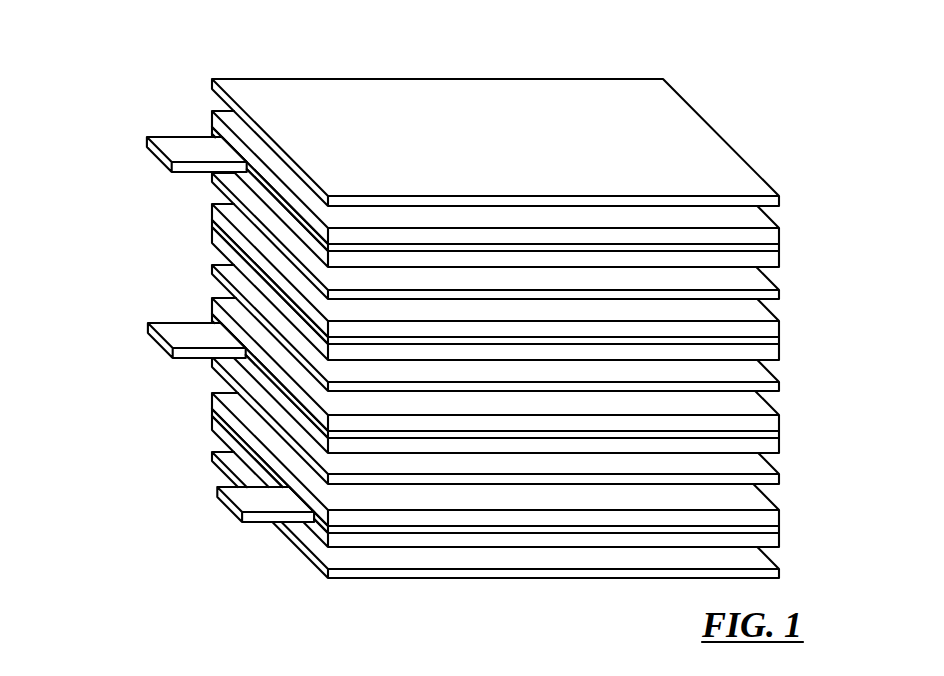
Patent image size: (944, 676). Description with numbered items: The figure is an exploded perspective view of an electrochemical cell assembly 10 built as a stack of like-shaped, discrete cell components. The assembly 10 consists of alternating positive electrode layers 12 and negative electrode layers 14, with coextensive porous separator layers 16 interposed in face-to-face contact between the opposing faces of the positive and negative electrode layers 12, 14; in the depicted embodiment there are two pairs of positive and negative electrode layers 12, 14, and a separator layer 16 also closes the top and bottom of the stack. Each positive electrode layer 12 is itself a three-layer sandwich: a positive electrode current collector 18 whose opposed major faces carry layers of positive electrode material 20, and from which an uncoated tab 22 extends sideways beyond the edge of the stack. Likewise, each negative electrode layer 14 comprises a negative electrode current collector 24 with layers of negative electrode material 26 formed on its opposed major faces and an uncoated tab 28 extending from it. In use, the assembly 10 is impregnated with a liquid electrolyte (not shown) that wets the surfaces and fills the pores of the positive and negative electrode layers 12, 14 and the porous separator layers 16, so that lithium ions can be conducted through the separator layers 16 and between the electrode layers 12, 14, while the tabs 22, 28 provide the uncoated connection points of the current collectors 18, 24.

The electrochemical cell assembly 10 is at (141, 46).
The positive electrode layer 12 is at (492, 273).
The negative electrode layer 14 is at (493, 389).
The porous separator layer 16 is at (363, 78).
The positive electrode current collector 18 is at (780, 250).
The positive electrode material 20 is at (780, 233).
The uncoated tab 22 is at (147, 151).
The negative electrode current collector 24 is at (780, 528).
The negative electrode material 26 is at (780, 512).
The uncoated tab 28 is at (228, 506).